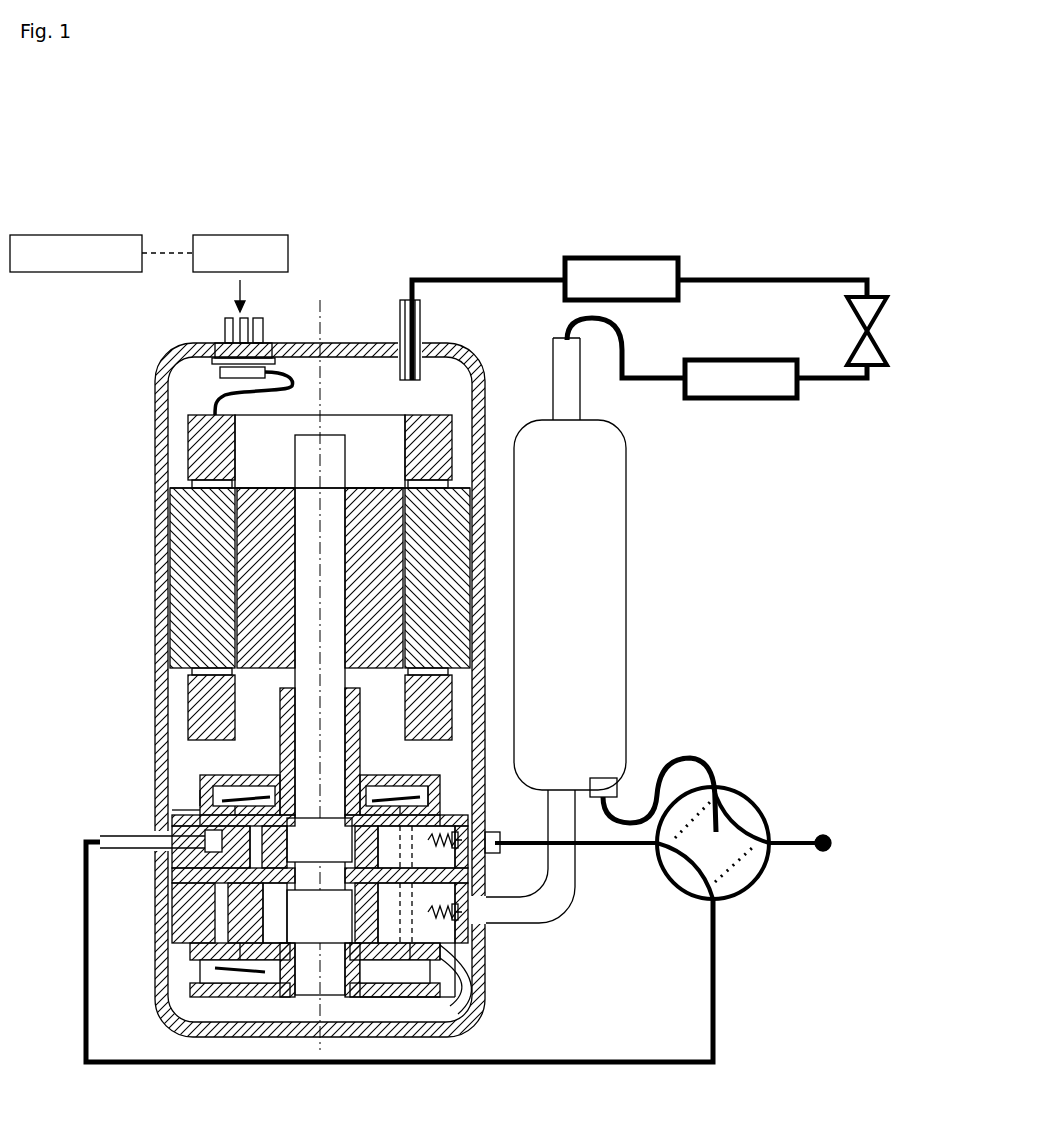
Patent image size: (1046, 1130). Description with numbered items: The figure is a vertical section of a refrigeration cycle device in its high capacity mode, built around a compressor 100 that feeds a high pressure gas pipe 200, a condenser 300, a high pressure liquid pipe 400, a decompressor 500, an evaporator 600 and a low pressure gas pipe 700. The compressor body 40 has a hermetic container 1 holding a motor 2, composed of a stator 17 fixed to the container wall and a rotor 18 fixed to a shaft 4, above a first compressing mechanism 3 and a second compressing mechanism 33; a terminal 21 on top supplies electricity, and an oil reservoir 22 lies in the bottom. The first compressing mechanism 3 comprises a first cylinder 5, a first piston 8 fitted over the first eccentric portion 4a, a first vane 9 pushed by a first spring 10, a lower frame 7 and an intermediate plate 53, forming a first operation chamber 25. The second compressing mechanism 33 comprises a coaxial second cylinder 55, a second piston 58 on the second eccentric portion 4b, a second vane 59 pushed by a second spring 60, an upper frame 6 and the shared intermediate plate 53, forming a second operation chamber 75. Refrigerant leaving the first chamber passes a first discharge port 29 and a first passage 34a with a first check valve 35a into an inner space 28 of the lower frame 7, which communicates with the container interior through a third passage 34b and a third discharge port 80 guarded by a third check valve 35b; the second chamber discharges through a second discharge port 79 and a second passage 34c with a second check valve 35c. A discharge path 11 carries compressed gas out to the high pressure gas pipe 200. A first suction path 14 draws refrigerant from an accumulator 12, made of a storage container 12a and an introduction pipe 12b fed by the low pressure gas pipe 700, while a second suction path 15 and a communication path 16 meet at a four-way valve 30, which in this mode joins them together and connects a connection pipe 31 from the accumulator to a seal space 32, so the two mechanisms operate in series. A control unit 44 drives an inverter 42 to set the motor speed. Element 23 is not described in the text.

The hermetic container 1 is at (168, 489).
The motor 2 is at (82, 500).
The first compressing mechanism 3 is at (360, 1000).
The shaft 4 is at (317, 608).
The first eccentric portion 4a is at (322, 928).
The second eccentric portion 4b is at (312, 836).
The first cylinder 5 is at (188, 880).
The upper frame 6 is at (230, 678).
The lower frame 7 is at (483, 996).
The first piston 8 is at (430, 1015).
The first vane 9 is at (470, 973).
The first spring 10 is at (485, 956).
The discharge path 11 is at (400, 330).
The accumulator 12 is at (583, 555).
The storage container 12a is at (530, 425).
The introduction pipe 12b is at (562, 388).
The first suction path 14 is at (494, 908).
The second suction path 15 is at (500, 850).
The communication path 16 is at (100, 838).
The stator 17 is at (195, 513).
The rotor 18 is at (265, 540).
The terminal 21 is at (222, 345).
The oil reservoir 22 is at (440, 788).
The lower roller 23 is at (465, 1000).
The first operation chamber 25 is at (255, 905).
The inner space 28 is at (250, 985).
The first discharge port 29 is at (262, 943).
The four-way valve 30 is at (748, 788).
The connection pipe 31 is at (690, 757).
The seal space 32 is at (830, 832).
The second compressing mechanism 33 is at (196, 812).
The first passage 34a is at (255, 948).
The third passage 34b is at (445, 1005).
The second passage 34c is at (242, 792).
The first check valve 35a is at (222, 968).
The third check valve 35b is at (412, 797).
The second check valve 35c is at (258, 799).
The compressor body 40 is at (145, 447).
The inverter 42 is at (288, 256).
The control unit 44 is at (78, 272).
The intermediate plate 53 is at (440, 876).
The second cylinder 55 is at (222, 833).
The second piston 58 is at (455, 838).
The second vane 59 is at (425, 800).
The second spring 60 is at (445, 816).
The second operation chamber 75 is at (250, 870).
The second discharge port 79 is at (198, 798).
The third discharge port 80 is at (436, 796).
The compressor 100 is at (145, 385).
The high pressure gas pipe 200 is at (430, 283).
The condenser 300 is at (690, 287).
The high pressure liquid pipe 400 is at (750, 283).
The decompressor 500 is at (870, 372).
The evaporator 600 is at (750, 390).
The low pressure gas pipe 700 is at (640, 385).